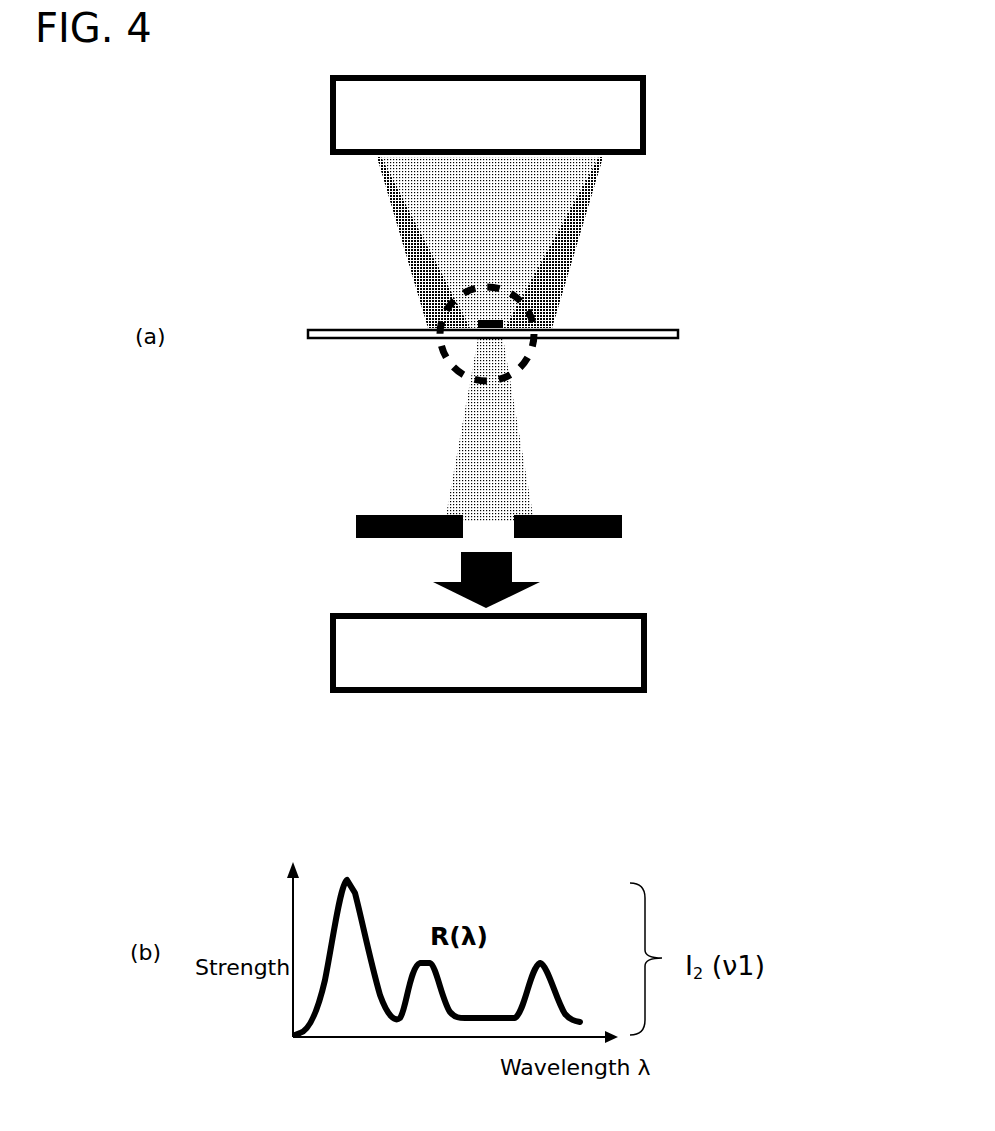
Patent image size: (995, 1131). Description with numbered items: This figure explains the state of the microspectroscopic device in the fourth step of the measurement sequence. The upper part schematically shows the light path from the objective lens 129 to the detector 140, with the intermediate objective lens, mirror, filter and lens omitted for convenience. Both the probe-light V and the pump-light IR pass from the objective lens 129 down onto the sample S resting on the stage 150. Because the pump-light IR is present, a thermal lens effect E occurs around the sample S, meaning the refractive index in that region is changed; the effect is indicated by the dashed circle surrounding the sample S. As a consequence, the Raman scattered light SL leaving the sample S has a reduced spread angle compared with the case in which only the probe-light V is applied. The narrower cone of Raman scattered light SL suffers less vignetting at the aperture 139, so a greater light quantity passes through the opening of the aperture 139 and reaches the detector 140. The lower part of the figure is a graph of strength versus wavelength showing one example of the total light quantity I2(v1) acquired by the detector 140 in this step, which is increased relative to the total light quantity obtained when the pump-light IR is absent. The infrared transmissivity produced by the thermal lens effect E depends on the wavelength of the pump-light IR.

The objective lens 129 is at (646, 117).
The probe-light V is at (560, 196).
The pump-light IR is at (575, 240).
The stage 150 is at (672, 329).
The sample S is at (452, 345).
The thermal lens effect E is at (525, 360).
The Raman scattered light SL is at (460, 462).
The aperture 139 is at (622, 525).
The detector 140 is at (646, 652).